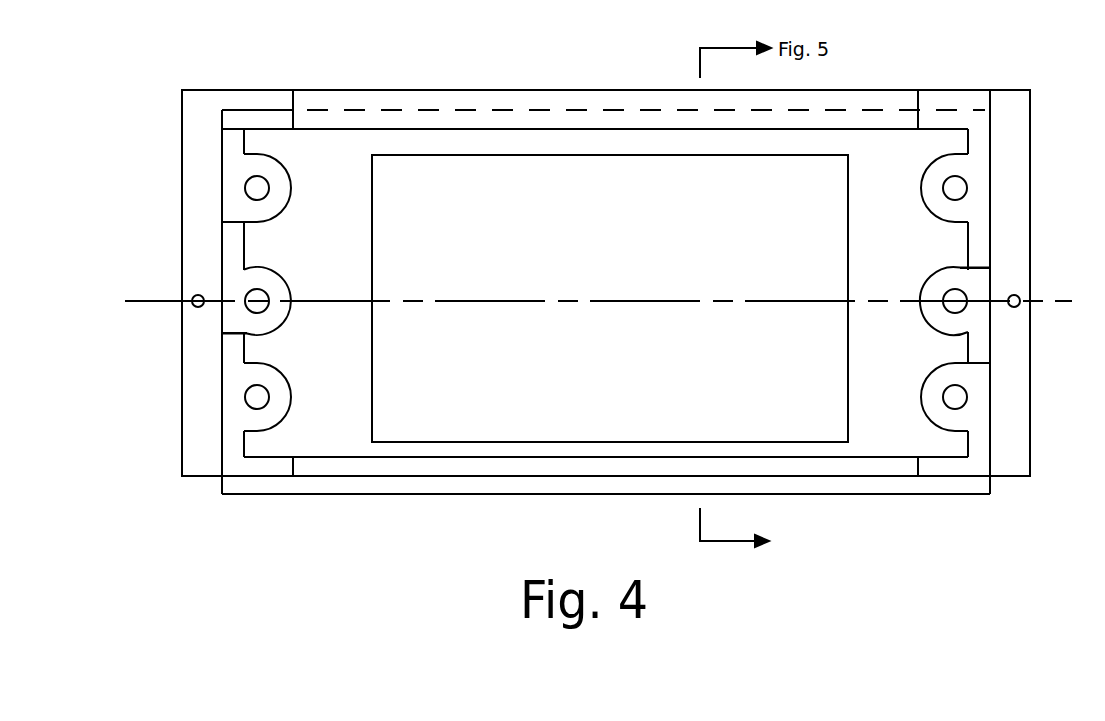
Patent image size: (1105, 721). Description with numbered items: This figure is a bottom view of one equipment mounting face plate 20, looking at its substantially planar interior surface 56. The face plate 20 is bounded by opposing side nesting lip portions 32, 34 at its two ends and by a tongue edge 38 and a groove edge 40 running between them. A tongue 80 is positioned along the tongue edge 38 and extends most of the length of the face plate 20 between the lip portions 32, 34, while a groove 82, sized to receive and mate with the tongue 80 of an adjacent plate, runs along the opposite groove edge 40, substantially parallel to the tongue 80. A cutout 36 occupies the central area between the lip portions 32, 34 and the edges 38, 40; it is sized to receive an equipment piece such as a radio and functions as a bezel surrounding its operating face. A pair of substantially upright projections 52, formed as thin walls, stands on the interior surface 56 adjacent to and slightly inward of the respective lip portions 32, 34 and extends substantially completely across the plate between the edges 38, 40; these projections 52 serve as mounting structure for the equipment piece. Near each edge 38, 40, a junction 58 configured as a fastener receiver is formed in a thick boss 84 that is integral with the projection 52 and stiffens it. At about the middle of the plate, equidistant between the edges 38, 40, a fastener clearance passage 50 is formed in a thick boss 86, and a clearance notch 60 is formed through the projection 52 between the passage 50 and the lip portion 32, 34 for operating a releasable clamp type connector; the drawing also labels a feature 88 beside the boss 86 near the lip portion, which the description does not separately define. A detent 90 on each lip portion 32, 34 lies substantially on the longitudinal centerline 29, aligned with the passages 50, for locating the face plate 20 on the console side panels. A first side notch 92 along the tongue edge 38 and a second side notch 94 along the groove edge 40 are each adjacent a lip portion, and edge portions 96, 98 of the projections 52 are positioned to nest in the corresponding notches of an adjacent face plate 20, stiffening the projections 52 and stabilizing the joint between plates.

The face plate 20 is at (186, 394).
The longitudinal centerline 29 is at (768, 302).
The side nesting lip portion 32 is at (1017, 107).
The side nesting lip portion 34 is at (197, 115).
The cutout 36 is at (527, 156).
The tongue edge 38 is at (996, 486).
The groove edge 40 is at (267, 90).
The fastener clearance passage 50 is at (268, 297).
The upright projection 52 is at (233, 118).
The interior surface 56 is at (603, 137).
The junction 58 is at (247, 184).
The clearance notch 60 is at (232, 224).
The tongue 80 is at (220, 485).
The groove 82 is at (452, 90).
The thick boss 84 is at (283, 180).
The thick boss 86 is at (267, 323).
The notch 88 is at (230, 328).
The detent 90 is at (196, 306).
The first side notch 92 is at (942, 468).
The second side notch 94 is at (270, 118).
The edge portion 96 is at (948, 97).
The edge portion 98 is at (257, 470).